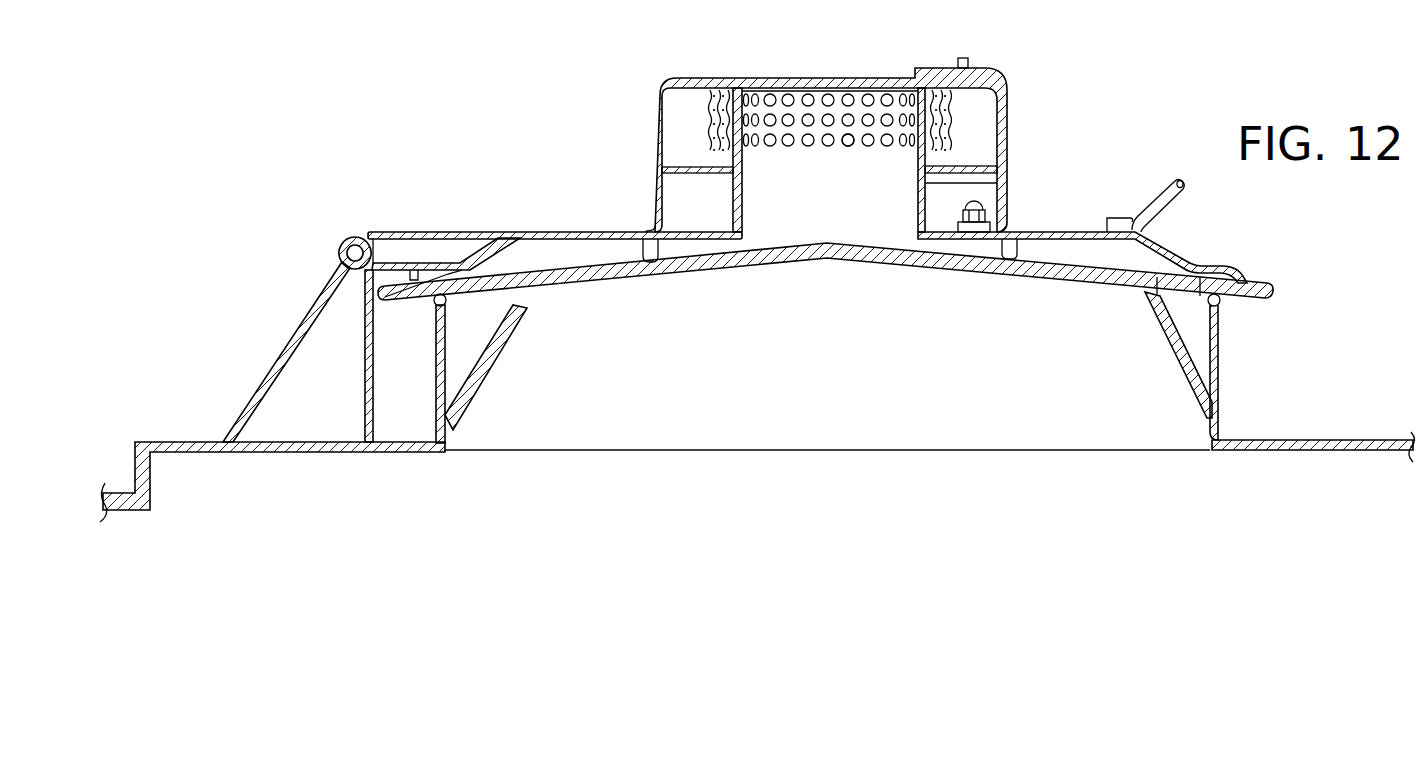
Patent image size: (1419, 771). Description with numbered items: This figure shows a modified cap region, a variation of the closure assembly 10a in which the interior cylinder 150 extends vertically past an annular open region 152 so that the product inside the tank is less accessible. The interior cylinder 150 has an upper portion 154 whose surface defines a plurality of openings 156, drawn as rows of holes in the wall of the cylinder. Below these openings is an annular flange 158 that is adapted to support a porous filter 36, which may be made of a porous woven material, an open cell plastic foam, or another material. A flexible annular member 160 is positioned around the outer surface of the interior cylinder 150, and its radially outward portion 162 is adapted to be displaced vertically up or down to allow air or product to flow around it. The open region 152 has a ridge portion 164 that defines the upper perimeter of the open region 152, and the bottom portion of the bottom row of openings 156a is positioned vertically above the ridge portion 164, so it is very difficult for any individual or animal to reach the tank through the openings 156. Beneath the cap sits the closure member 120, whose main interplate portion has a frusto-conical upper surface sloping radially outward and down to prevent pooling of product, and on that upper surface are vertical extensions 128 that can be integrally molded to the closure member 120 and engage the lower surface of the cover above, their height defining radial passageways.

The closure assembly 10a is at (1043, 100).
The porous filter material 36 is at (707, 127).
The closure member 120 is at (1063, 259).
The vertical extensions 128 is at (645, 253).
The interior cylinder 150 is at (745, 184).
The annular open region 152 is at (947, 208).
The upper portion 154 is at (737, 108).
The openings 156 is at (810, 97).
The bottom row of openings 156a is at (848, 138).
The annular flange 158 is at (926, 162).
The flexible annular member 160 is at (696, 165).
The radially outward portion 162 is at (660, 186).
The ridge portion 164 is at (947, 186).